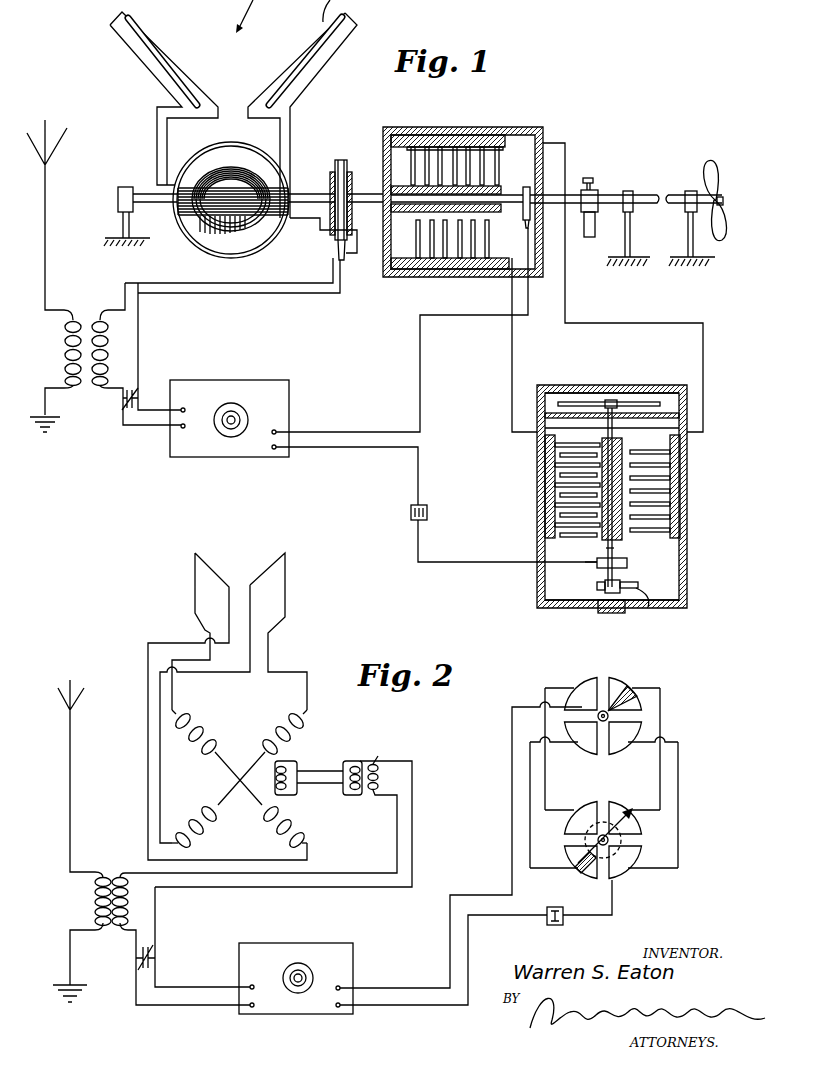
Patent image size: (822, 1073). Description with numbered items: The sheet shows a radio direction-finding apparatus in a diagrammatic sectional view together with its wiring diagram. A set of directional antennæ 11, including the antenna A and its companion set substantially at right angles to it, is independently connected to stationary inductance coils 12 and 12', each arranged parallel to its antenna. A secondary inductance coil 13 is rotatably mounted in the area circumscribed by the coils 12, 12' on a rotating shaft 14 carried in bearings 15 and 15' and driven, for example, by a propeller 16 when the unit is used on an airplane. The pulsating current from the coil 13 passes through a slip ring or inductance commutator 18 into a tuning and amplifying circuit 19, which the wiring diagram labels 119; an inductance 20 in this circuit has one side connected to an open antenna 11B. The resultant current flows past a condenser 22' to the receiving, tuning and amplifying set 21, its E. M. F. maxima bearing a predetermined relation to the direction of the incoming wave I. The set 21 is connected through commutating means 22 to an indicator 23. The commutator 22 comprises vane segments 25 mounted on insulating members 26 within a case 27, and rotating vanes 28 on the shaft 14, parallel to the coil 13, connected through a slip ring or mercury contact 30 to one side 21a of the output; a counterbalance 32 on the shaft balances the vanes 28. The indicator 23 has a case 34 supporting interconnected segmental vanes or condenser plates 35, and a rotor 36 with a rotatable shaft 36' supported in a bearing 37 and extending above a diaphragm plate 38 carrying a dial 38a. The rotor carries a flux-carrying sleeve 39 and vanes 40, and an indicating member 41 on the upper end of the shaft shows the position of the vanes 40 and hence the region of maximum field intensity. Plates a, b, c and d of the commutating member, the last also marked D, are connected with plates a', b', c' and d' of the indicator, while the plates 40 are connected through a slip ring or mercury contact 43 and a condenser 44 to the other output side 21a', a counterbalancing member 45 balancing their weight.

In FIG. 1, the directional antenna A is at (150, 37).
In FIG. 1, the open antenna 11B is at (50, 155).
In FIG. 2, the open antenna 11B is at (78, 700).
In FIG. 1, the stationary inductance coil 12 is at (217, 209).
In FIG. 2, the stationary inductance coil 12 is at (270, 780).
In FIG. 1, the stationary inductance coil 12' is at (210, 251).
In FIG. 2, the stationary inductance coil 12' is at (239, 773).
In FIG. 1, the secondary inductance coil 13 is at (262, 172).
In FIG. 2, the secondary inductance coil 13 is at (293, 798).
In FIG. 1, the rotating shaft 14 is at (305, 194).
In FIG. 1, the bearing 15 is at (102, 216).
In FIG. 1, the bearing 15' is at (661, 206).
In FIG. 1, the propeller 16 is at (718, 168).
In FIG. 1, the slip ring or inductance commutator 18 is at (349, 160).
In FIG. 2, the slip ring or inductance commutator 18 is at (378, 762).
In FIG. 1, the tuning and amplifying circuit 19 is at (270, 278).
In FIG. 1, the inductance 20 is at (87, 308).
In FIG. 2, the inductance 20 is at (112, 865).
In FIG. 1, the receiving, tuning and amplifying set 21 is at (253, 390).
In FIG. 2, the receiving, tuning and amplifying set 21 is at (320, 956).
In FIG. 1, the output side 21a is at (400, 331).
In FIG. 2, the output side 21a is at (459, 846).
In FIG. 1, the output side 21a' is at (434, 503).
In FIG. 2, the output side 21a' is at (474, 964).
In FIG. 1, the commutating means 22 is at (530, 279).
In FIG. 1, the condenser 22' is at (146, 346).
In FIG. 1, the indicator 23 is at (692, 518).
In FIG. 1, the vane segments 25 is at (500, 156).
In FIG. 2, the vane segments 25 is at (594, 690).
In FIG. 1, the insulating members 26 is at (430, 134).
In FIG. 1, the case 27 is at (476, 130).
In FIG. 1, the rotating vanes 28 is at (503, 172).
In FIG. 1, the slip ring or mercury contact 30 is at (526, 216).
In FIG. 1, the counterbalance 32 is at (590, 240).
In FIG. 1, the case 34 is at (690, 598).
In FIG. 1, the segmental vanes 35 is at (548, 541).
In FIG. 2, the segmental vanes 35 is at (588, 810).
In FIG. 1, the rotor 36 is at (634, 465).
In FIG. 1, the rotatable shaft 36' is at (634, 550).
In FIG. 1, the bearing 37 is at (608, 615).
In FIG. 1, the diaphragm plate 38 is at (551, 390).
In FIG. 1, the dial 38a is at (668, 414).
In FIG. 1, the sleeve 39 is at (604, 541).
In FIG. 1, the vanes 40 is at (555, 508).
In FIG. 1, the indicating member 41 is at (580, 402).
In FIG. 1, the slip ring or mercury contact 43 is at (604, 569).
In FIG. 1, the condenser 44 is at (410, 515).
In FIG. 1, the counterbalancing member 45 is at (656, 613).
In FIG. 1, the plate D is at (555, 428).
In FIG. 2, the incoming wave I is at (253, 551).
In FIG. 2, the set of directional antennæ 11 is at (304, 597).
In FIG. 2, the conductor 119 is at (341, 872).
In FIG. 2, the commutator plate a is at (227, 692).
In FIG. 2, the indicator plate a' is at (366, 687).
In FIG. 2, the commutator plate b is at (642, 670).
In FIG. 2, the indicator plate b' is at (627, 794).
In FIG. 2, the commutator plate c is at (635, 758).
In FIG. 2, the indicator plate c' is at (649, 852).
In FIG. 2, the commutator plate d is at (566, 759).
In FIG. 2, the indicator plate d' is at (587, 880).